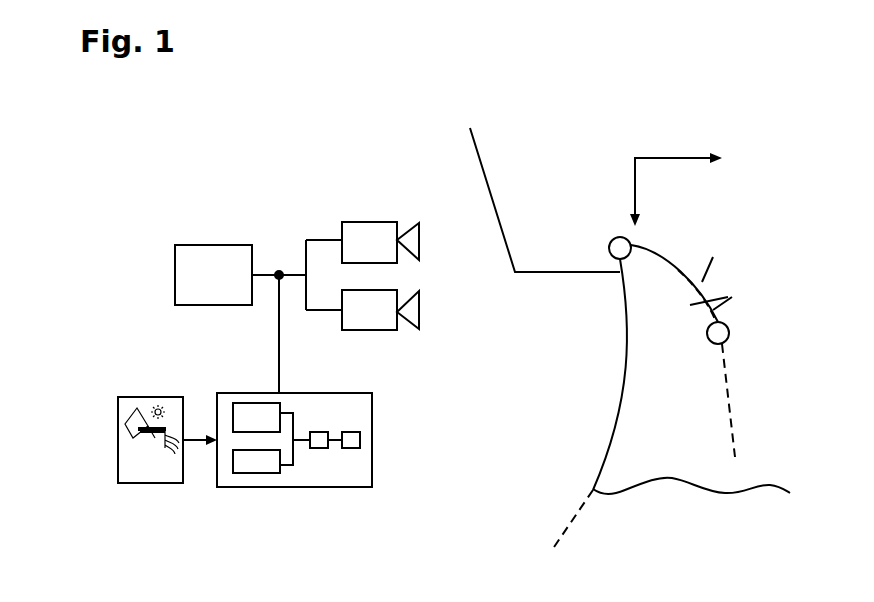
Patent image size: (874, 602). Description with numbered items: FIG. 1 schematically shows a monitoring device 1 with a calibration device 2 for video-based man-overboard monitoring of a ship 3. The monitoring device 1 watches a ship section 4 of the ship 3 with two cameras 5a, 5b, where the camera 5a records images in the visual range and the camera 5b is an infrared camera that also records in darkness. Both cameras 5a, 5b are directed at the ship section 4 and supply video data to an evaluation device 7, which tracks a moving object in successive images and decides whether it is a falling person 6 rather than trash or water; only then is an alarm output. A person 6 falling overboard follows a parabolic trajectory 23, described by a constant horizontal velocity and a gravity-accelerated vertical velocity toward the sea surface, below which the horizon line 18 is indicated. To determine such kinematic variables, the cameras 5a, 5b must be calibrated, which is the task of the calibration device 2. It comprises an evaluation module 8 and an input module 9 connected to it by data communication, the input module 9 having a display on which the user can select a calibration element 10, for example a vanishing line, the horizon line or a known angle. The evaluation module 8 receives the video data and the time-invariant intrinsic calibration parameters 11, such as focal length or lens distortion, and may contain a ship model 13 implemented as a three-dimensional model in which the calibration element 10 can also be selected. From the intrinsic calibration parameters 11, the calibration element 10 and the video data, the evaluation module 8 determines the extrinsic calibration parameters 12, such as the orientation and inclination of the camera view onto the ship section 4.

The monitoring device 1 is at (434, 110).
The calibration device 2 is at (100, 431).
The ship 3 is at (480, 153).
The ship section 4 is at (604, 111).
The camera 5a is at (370, 222).
The camera 5b is at (372, 330).
The person 6 is at (713, 265).
The evaluation device 7 is at (215, 245).
The evaluation module 8 is at (373, 455).
The input module 9 is at (152, 397).
The calibration element 10 is at (150, 433).
The intrinsic calibration parameters 11 is at (258, 403).
The extrinsic calibration parameters 12 is at (317, 448).
The ship model 13 is at (350, 448).
The horizon line 18 is at (748, 486).
The trajectory 23 is at (728, 385).